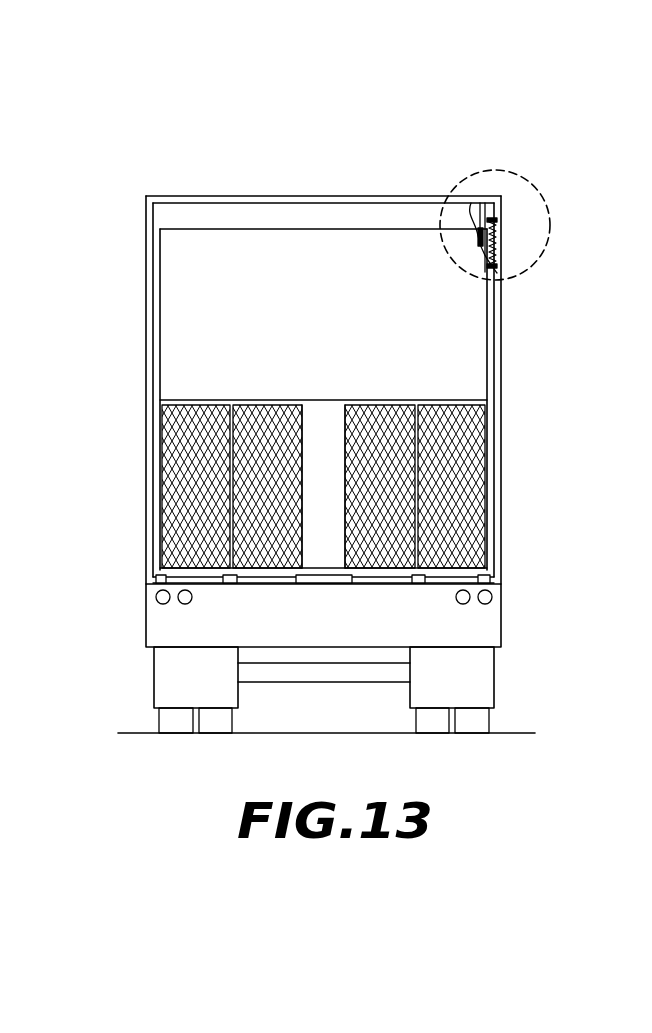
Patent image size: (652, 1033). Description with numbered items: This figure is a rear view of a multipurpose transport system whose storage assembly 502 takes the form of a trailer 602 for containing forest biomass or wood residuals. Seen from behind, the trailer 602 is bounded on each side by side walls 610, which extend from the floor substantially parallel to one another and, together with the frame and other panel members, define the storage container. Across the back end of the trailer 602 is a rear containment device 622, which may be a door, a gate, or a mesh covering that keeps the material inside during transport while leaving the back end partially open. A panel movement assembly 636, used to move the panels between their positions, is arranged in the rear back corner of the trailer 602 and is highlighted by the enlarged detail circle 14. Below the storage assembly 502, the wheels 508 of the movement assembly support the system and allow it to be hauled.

The storage assembly 502 is at (201, 124).
The trailer 602 is at (200, 200).
The side walls 610 is at (146, 357).
The rear containment device 622 is at (467, 490).
The panel movement assembly 636 is at (513, 219).
The detail view circle 14 is at (531, 171).
The wheels 508 is at (168, 722).